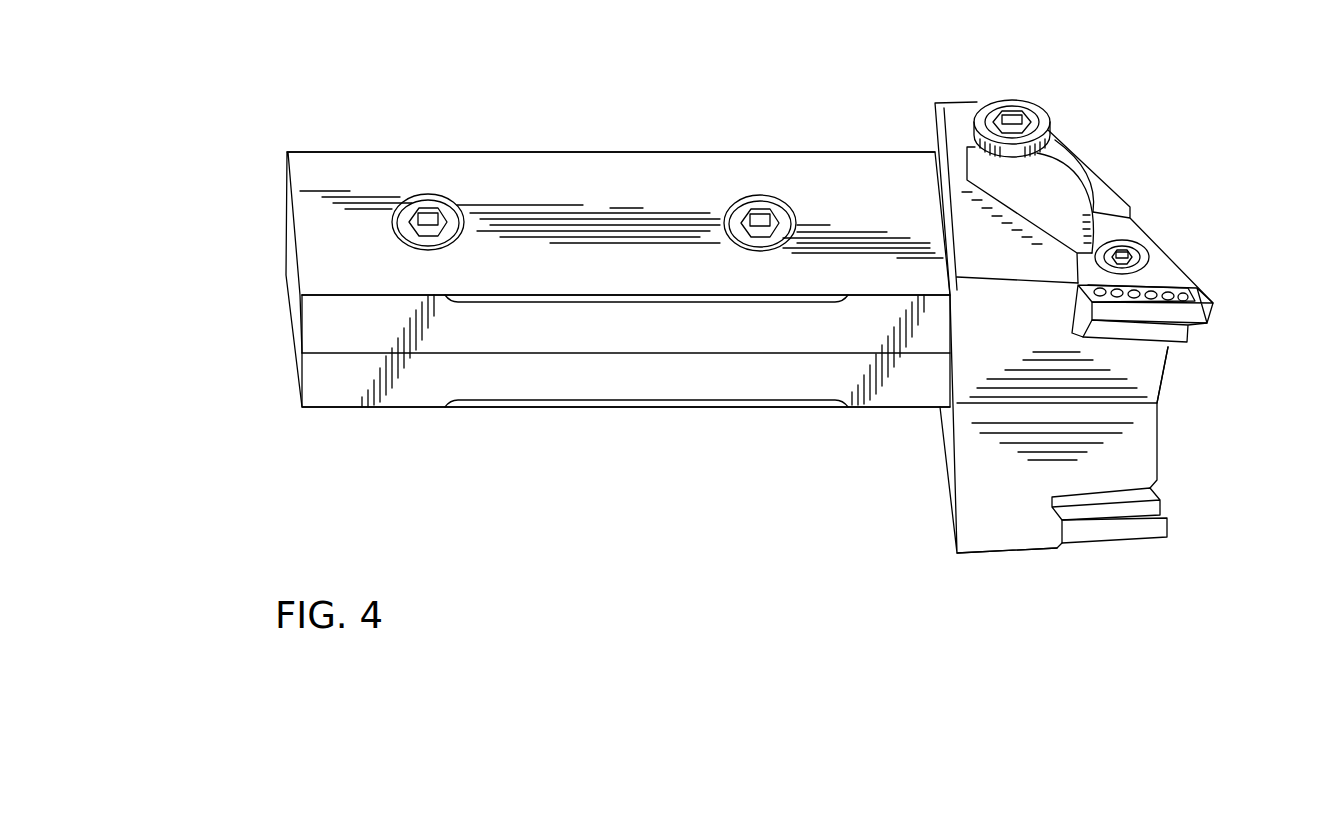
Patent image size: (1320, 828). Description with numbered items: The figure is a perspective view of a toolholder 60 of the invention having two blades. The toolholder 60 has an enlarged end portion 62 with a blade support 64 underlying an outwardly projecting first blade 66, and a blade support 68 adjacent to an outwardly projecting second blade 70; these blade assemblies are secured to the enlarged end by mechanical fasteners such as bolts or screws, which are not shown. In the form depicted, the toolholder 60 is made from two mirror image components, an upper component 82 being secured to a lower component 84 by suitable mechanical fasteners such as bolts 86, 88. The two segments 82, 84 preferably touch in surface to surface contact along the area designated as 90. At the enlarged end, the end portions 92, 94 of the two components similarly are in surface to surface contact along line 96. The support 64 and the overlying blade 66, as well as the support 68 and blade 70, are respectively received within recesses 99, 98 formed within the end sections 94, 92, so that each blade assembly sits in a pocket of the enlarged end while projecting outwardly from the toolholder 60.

The toolholder 60 is at (560, 411).
The enlarged end portion 62 is at (975, 473).
The blade support 64 is at (1200, 335).
The first blade 66 is at (1213, 310).
The blade support 68 is at (1160, 505).
The second blade 70 is at (1130, 535).
The upper component 82 is at (352, 152).
The lower component 84 is at (385, 408).
The bolt 86 is at (442, 213).
The bolt 88 is at (767, 205).
The contact area 90 is at (750, 352).
The enlarged end portion 92 is at (1025, 498).
The enlarged end portion 94 is at (1157, 260).
The contact line 96 is at (1027, 407).
The recess 98 is at (1057, 548).
The recess 99 is at (1168, 346).